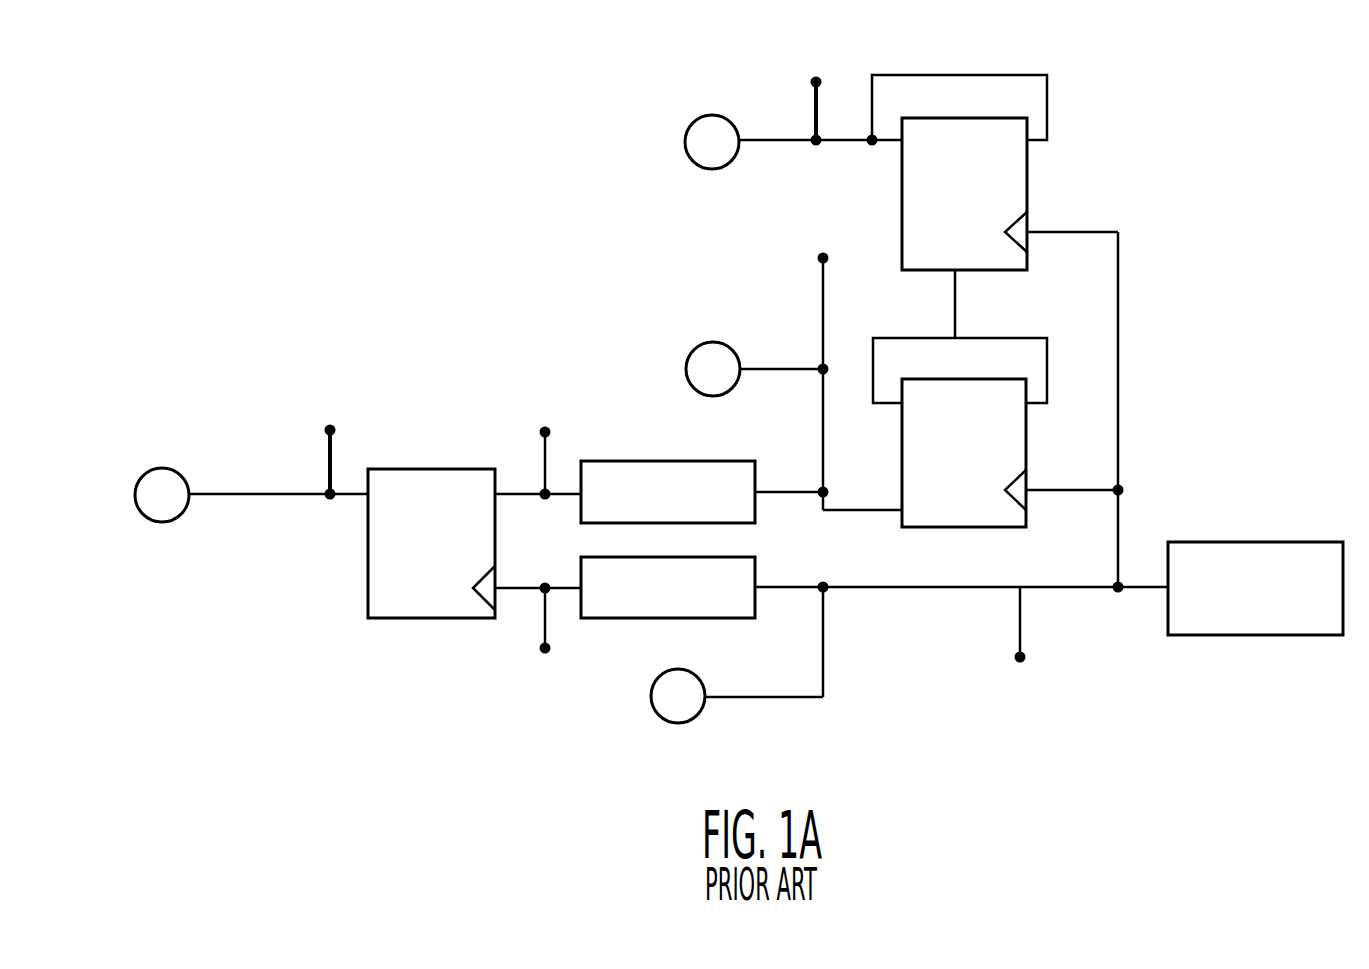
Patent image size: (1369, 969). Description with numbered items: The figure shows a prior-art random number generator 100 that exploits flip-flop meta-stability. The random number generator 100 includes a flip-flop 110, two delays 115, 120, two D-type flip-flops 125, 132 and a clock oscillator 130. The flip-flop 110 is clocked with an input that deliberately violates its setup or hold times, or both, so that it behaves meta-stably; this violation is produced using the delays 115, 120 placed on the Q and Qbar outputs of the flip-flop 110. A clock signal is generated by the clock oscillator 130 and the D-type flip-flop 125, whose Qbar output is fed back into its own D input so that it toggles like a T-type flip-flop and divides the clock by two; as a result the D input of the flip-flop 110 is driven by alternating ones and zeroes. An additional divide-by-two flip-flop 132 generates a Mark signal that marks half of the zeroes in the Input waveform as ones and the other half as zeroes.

The random number generator 100 is at (228, 197).
The flip-flop 110 is at (368, 567).
The delay 115 is at (713, 523).
The delay 120 is at (700, 618).
The D-type flip-flop 125 is at (985, 527).
The clock oscillator 130 is at (1195, 635).
The divide-by-two flip-flop 132 is at (1027, 175).